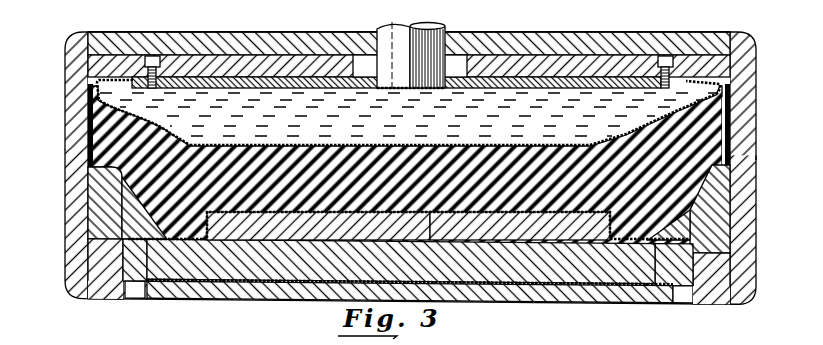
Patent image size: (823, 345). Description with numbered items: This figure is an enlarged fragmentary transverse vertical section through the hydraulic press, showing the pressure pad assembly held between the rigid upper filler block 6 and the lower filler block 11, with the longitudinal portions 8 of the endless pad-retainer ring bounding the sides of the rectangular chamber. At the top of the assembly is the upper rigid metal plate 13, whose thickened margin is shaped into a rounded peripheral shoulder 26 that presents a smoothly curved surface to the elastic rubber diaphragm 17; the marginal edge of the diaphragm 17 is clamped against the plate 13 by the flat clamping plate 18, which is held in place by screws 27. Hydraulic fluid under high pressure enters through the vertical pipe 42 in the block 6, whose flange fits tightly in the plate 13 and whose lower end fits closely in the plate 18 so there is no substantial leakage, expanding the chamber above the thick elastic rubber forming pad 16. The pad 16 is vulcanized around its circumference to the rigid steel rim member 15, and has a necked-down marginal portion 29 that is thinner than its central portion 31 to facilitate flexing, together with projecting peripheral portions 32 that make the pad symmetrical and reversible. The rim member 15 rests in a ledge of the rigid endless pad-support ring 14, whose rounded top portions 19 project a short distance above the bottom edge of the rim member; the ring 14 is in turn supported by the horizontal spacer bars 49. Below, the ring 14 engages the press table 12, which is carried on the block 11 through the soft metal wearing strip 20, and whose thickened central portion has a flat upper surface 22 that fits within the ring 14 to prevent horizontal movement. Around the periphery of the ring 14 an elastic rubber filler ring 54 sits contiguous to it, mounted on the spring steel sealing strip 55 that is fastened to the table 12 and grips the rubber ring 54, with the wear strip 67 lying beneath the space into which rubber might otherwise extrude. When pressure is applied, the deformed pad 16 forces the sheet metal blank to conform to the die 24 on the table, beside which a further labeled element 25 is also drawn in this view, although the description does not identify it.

The upper filler block 6 is at (253, 32).
The longitudinal portions of pad-retainer ring 8 is at (65, 88).
The lower filler block 11 is at (188, 297).
The press table 12 is at (497, 283).
The upper rigid metal plate 13 is at (543, 37).
The pad-support ring 14 is at (97, 203).
The rim member 15 is at (85, 137).
The forming pad 16 is at (287, 142).
The diaphragm 17 is at (513, 143).
The clamping plate 18 is at (208, 85).
The rounded top portions 19 is at (88, 173).
The wearing strip 20 is at (276, 297).
The upper surface of press table 22 is at (529, 241).
The die 24 is at (341, 236).
The support block 25 is at (430, 233).
The rounded peripheral shoulder 26 is at (88, 63).
The screws 27 is at (152, 55).
The marginal portion of pad 29 is at (135, 123).
The central portion of pad 31 is at (380, 143).
The projecting peripheral portions 32 is at (88, 113).
The vertical pipe 42 is at (447, 33).
The spacer bars 49 is at (100, 290).
The rubber filler ring 54 is at (130, 237).
The sealing strip 55 is at (160, 288).
The wear strip 67 is at (122, 292).